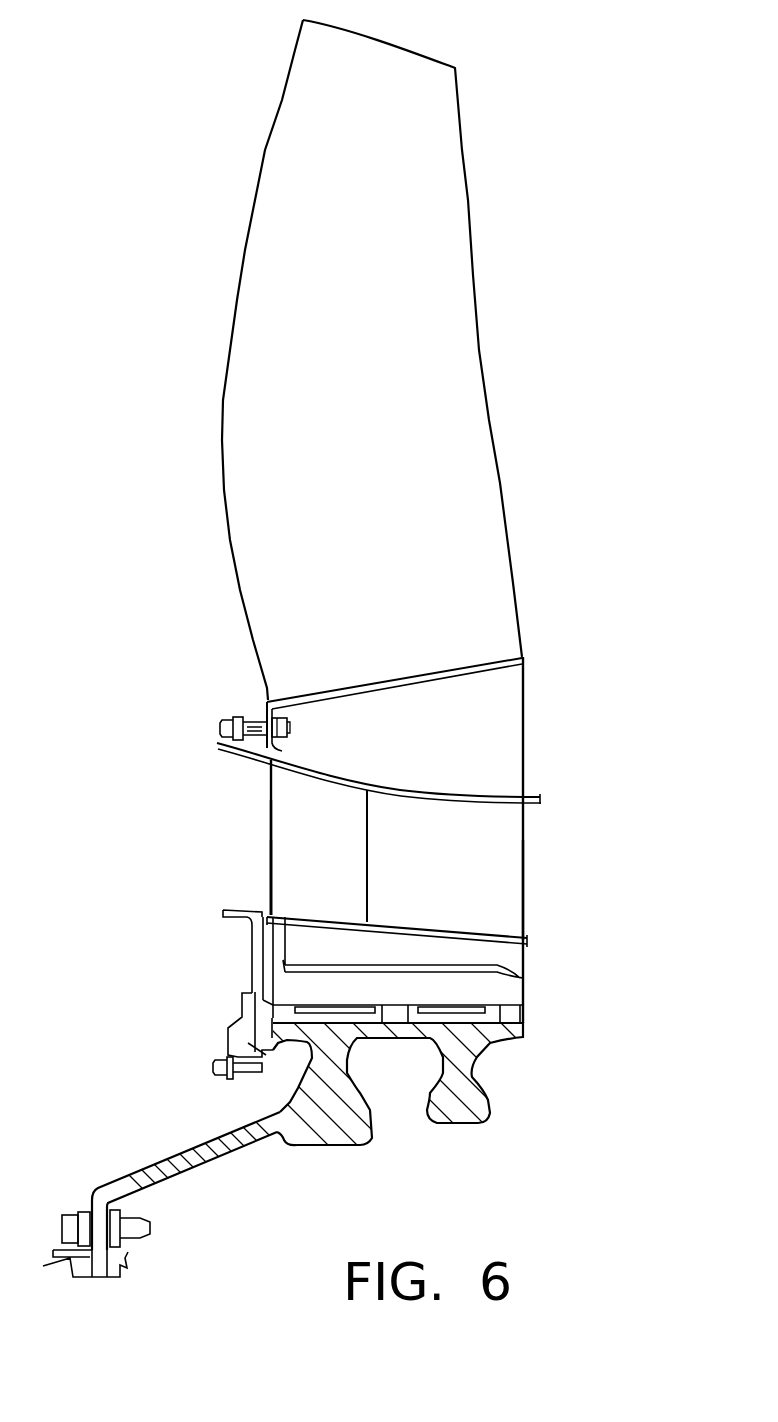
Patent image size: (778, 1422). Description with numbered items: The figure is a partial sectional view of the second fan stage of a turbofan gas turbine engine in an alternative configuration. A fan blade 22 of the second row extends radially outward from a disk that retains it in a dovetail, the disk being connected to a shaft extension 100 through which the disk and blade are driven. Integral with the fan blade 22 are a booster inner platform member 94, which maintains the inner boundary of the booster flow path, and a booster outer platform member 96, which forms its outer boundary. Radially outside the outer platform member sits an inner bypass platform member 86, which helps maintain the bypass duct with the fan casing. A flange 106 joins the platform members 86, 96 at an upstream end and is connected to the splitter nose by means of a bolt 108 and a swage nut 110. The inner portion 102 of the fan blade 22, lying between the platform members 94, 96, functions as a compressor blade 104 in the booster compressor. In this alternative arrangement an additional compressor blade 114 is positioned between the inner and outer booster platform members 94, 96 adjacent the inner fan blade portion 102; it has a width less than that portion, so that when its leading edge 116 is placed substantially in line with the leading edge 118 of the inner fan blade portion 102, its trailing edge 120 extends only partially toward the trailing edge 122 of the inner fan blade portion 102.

The fan blade 22 is at (533, 197).
The inner bypass platform member 86 is at (405, 637).
The booster outer platform member 96 is at (458, 763).
The booster inner platform member 94 is at (545, 905).
The swage nut 110 is at (230, 717).
The flange 106 is at (292, 716).
The bolt 108 is at (291, 730).
The leading edge of inner fan blade portion 118 is at (269, 783).
The leading edge of compressor blade 116 is at (269, 805).
The compressor blade 114 is at (295, 848).
The trailing edge of compressor blade 120 is at (405, 838).
The compressor blade 104 is at (421, 894).
The trailing edge of inner fan blade portion 122 is at (570, 822).
The inner portion of fan blade 102 is at (548, 880).
The shaft extension 100 is at (170, 1158).